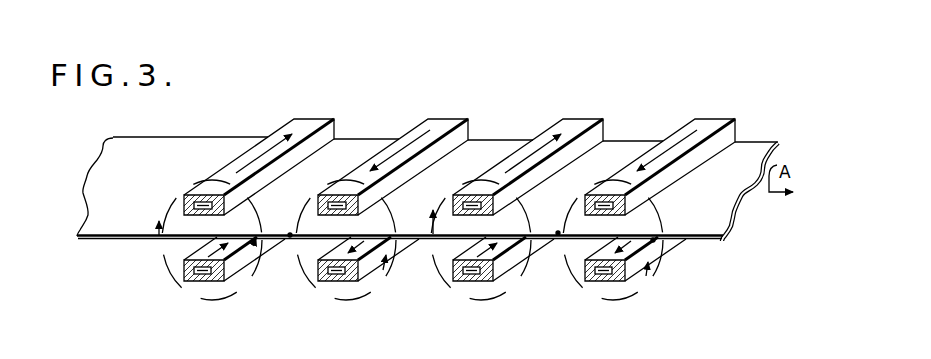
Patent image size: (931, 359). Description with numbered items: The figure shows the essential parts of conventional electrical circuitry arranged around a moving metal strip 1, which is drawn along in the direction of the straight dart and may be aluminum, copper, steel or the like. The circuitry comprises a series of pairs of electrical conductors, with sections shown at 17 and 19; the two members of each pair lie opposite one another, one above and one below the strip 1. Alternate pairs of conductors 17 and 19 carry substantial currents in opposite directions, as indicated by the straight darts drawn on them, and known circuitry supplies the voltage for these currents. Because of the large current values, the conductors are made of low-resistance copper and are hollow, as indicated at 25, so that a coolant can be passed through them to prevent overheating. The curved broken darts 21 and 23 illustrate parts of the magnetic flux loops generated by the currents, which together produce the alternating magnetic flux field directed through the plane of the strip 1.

The moving metal strip 1 is at (135, 236).
The electrical conductor section 17 is at (288, 128).
The electrical conductor section 19 is at (425, 130).
The magnetic flux loop 21 is at (238, 282).
The magnetic flux loop 23 is at (368, 280).
The hollow conductor passage 25 is at (202, 204).